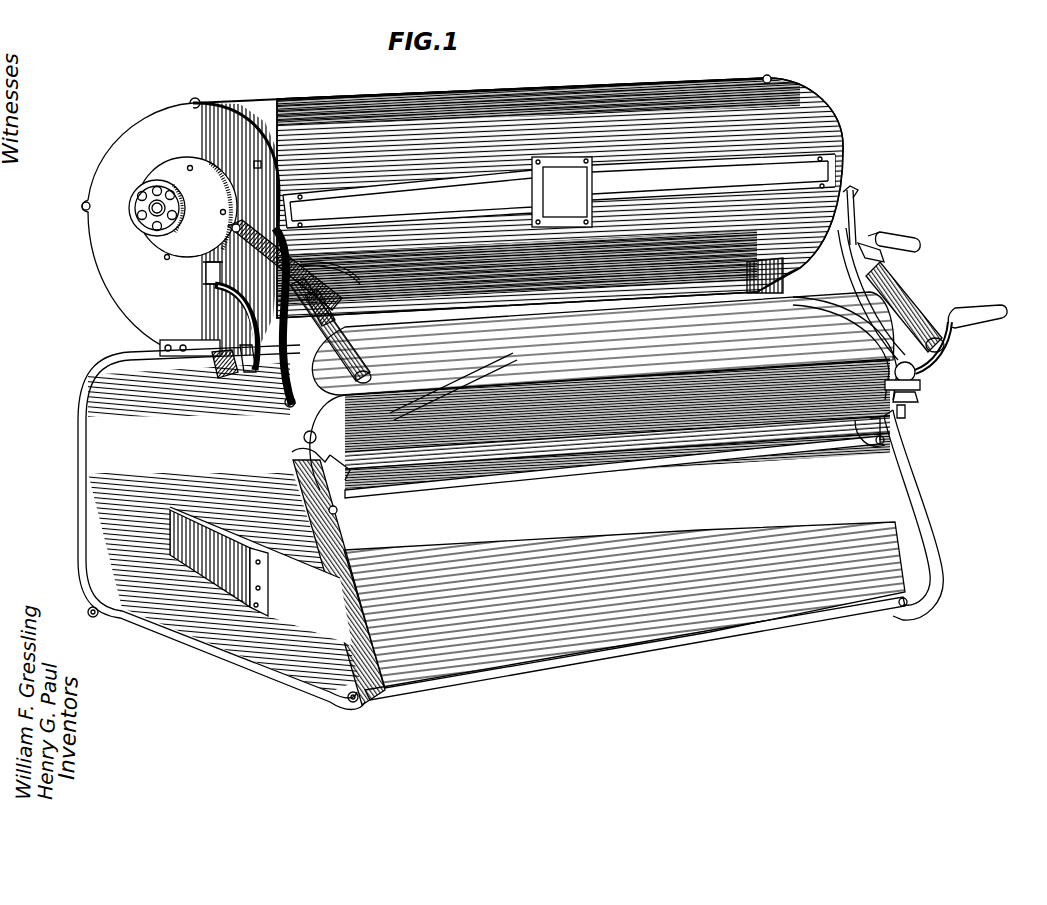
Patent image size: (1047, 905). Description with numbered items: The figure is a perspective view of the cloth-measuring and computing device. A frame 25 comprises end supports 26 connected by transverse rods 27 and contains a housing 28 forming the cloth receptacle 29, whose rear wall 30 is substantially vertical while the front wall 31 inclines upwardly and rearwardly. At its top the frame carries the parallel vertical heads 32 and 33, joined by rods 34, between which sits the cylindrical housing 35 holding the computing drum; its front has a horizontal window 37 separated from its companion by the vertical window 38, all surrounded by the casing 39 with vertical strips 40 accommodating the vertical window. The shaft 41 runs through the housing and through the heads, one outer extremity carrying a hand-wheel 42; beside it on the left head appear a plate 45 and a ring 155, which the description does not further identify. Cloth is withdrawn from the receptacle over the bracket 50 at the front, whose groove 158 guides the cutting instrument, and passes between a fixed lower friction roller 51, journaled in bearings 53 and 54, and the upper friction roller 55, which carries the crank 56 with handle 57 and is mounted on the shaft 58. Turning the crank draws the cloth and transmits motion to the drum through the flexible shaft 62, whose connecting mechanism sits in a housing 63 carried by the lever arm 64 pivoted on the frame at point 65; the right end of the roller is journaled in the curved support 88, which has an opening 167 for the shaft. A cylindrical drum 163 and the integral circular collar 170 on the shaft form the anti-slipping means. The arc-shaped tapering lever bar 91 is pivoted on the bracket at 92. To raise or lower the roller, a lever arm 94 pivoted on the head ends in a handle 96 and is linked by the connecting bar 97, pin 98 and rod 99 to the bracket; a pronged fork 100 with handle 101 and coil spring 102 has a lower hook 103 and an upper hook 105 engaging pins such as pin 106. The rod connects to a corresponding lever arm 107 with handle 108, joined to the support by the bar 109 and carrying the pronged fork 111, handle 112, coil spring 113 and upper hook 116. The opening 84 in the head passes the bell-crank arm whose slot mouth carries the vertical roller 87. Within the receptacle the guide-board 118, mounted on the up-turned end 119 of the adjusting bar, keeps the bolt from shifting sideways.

The frame 25 is at (350, 715).
The end supports 26 is at (210, 666).
The transverse rods 27 is at (660, 470).
The housing 28 is at (292, 688).
The cloth receptacle 29 is at (260, 515).
The rear wall 30 is at (440, 202).
The front wall 31 is at (624, 605).
The head 32 is at (145, 134).
The head 33 is at (822, 118).
The rods 34 is at (637, 90).
The cylindrical housing 35 is at (812, 133).
The horizontal window 37 is at (717, 186).
The vertical window 38 is at (568, 207).
The casing 39 is at (479, 206).
The vertical strips 40 is at (543, 212).
The shaft 41 is at (150, 218).
The hand-wheel 42 is at (155, 190).
The gear plate 45 is at (206, 203).
The bracket 50 is at (920, 389).
The friction roller 51 is at (727, 420).
The bearing 53 is at (300, 458).
The bearing 54 is at (930, 400).
The upper friction roller 55 is at (723, 397).
The crank 56 is at (940, 360).
The handle 57 is at (1004, 317).
The shaft 58 is at (305, 436).
The flexible shaft 62 is at (193, 338).
The housing 63 is at (376, 379).
The lever arm 64 is at (223, 367).
The pivot point 65 is at (172, 347).
The opening 84 is at (200, 288).
The vertical roller 87 is at (205, 278).
The curved support 88 is at (872, 294).
The arc-shaped tapering lever bar 91 is at (256, 331).
The pivot 92 is at (247, 368).
The lever arm 94 is at (247, 267).
The handle 96 is at (420, 376).
The connecting bar 97 is at (290, 380).
The pin 98 is at (292, 425).
The rod 99 is at (302, 262).
The pronged fork 100 is at (280, 236).
The handle 101 is at (382, 319).
The coil spring 102 is at (332, 309).
The lower engaging hook 103 is at (247, 253).
The upper hook 105 is at (330, 205).
The pin 106 is at (258, 162).
The lever arm 107 is at (910, 270).
The handle 108 is at (905, 300).
The bar 109 is at (856, 271).
The pronged fork 111 is at (860, 220).
The handle 112 is at (895, 233).
The coil spring 113 is at (905, 255).
The upper hook 116 is at (858, 194).
The guide-board 118 is at (339, 582).
The up-turned end 119 is at (265, 579).
The gear ring 155 is at (183, 250).
The groove 158 is at (385, 485).
The cylindrical drum 163 is at (390, 413).
The opening 167 is at (935, 371).
The integral circular collar 170 is at (856, 346).